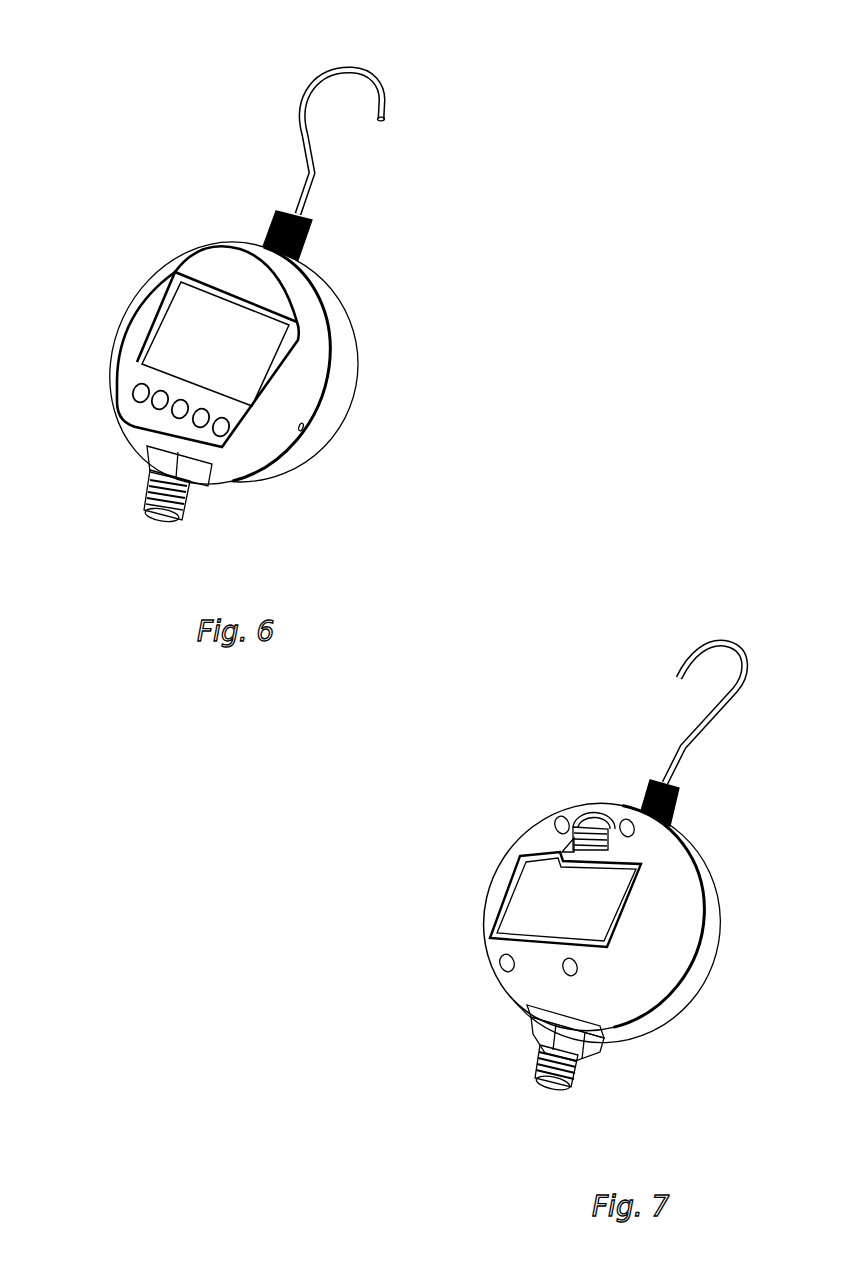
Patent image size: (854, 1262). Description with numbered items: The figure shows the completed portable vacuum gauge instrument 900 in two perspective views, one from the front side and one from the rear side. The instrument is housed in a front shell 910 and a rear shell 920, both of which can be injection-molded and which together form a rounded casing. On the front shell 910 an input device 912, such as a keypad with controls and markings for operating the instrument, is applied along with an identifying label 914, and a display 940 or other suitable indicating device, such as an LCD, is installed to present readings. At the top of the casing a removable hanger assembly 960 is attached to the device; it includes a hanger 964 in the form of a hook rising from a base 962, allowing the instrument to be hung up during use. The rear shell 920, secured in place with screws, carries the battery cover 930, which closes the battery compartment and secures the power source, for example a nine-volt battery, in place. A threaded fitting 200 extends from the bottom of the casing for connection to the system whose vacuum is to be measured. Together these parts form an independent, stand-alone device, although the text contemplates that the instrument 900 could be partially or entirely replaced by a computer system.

In FIG. 6, the portable vacuum gauge instrument 900 is at (250, 278).
In FIG. 7, the portable vacuum gauge instrument 900 is at (621, 867).
In FIG. 6, the front shell 910 is at (253, 362).
In FIG. 7, the front shell 910 is at (635, 924).
In FIG. 6, the input device 912 is at (171, 359).
In FIG. 6, the identifying label 914 is at (194, 255).
In FIG. 6, the rear shell 920 is at (288, 364).
In FIG. 7, the rear shell 920 is at (608, 917).
In FIG. 7, the battery cover 930 is at (533, 880).
In FIG. 6, the display 940 is at (179, 329).
In FIG. 6, the hanger assembly 960 is at (317, 137).
In FIG. 6, the hook base 962 is at (343, 222).
In FIG. 6, the hanger 964 is at (281, 142).
In FIG. 6, the fitting 200 is at (221, 495).